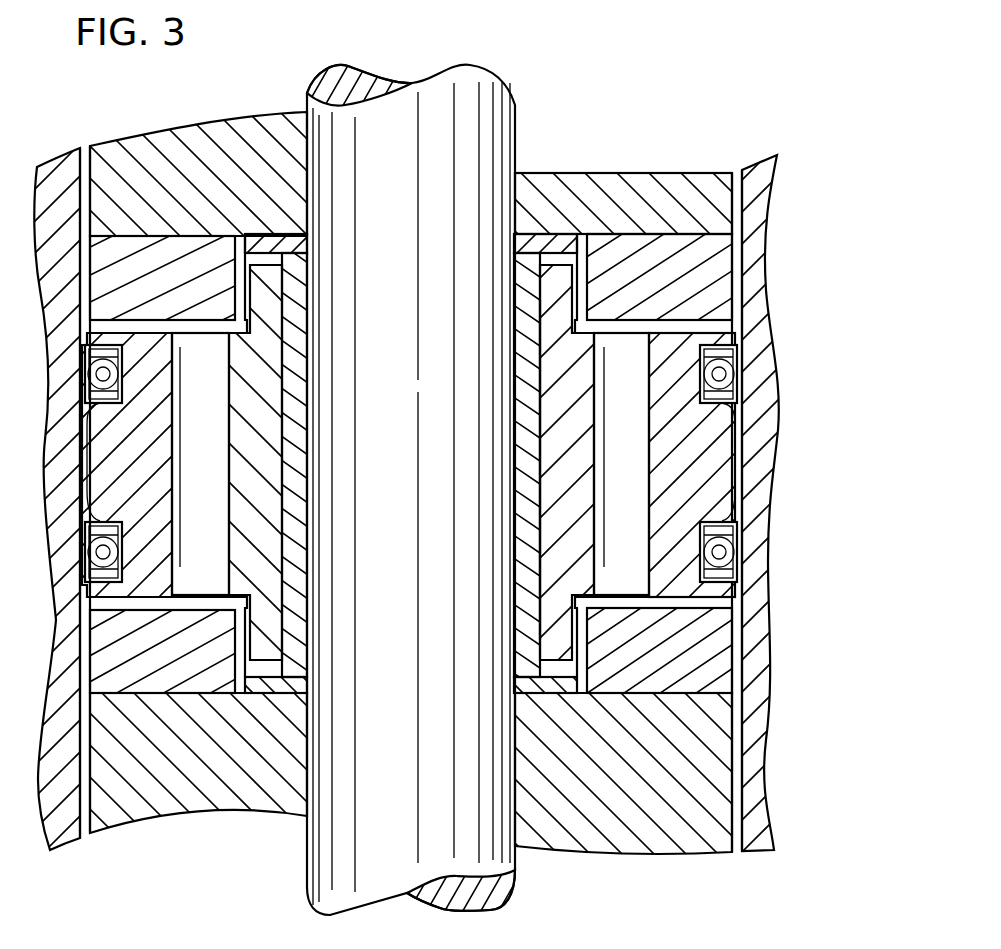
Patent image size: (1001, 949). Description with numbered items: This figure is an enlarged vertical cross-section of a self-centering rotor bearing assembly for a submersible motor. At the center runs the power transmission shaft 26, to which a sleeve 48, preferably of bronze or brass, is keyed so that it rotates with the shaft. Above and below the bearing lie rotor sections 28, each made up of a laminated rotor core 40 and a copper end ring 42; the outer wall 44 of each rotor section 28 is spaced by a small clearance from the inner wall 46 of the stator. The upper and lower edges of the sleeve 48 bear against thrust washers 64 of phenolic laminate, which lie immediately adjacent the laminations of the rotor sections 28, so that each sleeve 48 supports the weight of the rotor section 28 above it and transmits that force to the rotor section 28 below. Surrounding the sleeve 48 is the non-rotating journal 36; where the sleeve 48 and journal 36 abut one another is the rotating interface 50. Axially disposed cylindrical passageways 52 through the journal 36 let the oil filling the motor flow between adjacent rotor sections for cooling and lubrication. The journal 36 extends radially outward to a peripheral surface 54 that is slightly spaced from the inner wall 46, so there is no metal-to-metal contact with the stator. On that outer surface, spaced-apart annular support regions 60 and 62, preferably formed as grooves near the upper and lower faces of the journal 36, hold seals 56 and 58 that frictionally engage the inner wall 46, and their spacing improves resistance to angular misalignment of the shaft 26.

The power transmission shaft 26 is at (440, 170).
The rotor section 28 is at (691, 474).
The journal 36 is at (567, 416).
The laminated rotor core 40 is at (705, 206).
The copper end ring 42 is at (705, 277).
The outer wall 44 is at (740, 758).
The inner wall 46 is at (744, 654).
The sleeve 48 is at (530, 466).
The rotating interface 50 is at (542, 517).
The cylindrical passageways 52 is at (625, 438).
The peripheral surface 54 is at (745, 487).
The seal 56 is at (720, 373).
The seal 58 is at (720, 552).
The annular support region 60 is at (720, 350).
The annular support region 62 is at (735, 583).
The thrust washer 64 is at (557, 683).